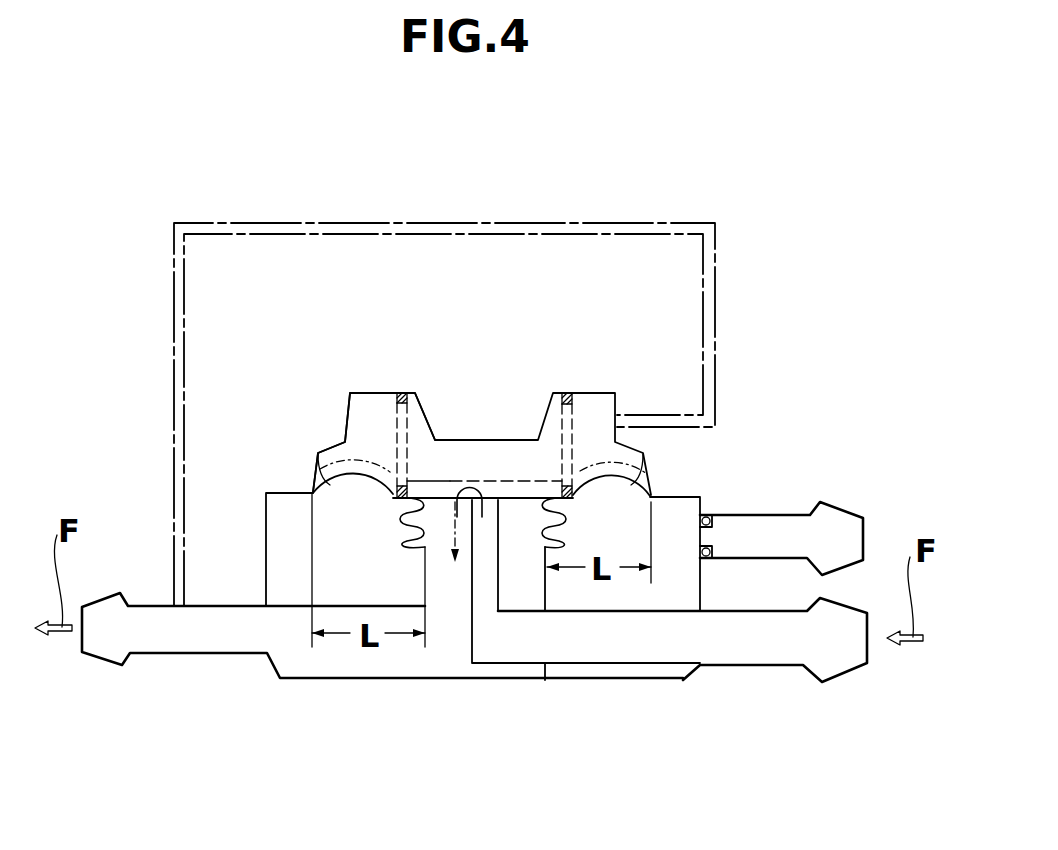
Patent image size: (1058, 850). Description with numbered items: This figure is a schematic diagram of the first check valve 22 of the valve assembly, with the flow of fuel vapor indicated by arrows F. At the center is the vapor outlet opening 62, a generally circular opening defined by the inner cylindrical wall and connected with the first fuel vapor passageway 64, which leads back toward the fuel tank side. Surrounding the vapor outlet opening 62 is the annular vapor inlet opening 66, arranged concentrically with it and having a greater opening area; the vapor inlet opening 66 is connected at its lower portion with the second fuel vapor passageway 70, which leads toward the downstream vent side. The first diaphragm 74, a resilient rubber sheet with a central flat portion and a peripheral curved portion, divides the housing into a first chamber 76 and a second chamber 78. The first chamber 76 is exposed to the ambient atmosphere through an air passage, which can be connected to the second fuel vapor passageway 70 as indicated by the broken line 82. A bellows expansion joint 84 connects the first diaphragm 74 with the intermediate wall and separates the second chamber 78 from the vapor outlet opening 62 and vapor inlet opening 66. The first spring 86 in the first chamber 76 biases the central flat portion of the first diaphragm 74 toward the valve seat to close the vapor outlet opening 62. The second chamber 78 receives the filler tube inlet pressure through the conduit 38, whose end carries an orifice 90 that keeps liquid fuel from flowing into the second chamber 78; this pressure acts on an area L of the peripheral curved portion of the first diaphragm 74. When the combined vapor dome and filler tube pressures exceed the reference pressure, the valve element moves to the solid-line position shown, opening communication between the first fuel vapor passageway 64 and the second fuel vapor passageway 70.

The first check valve 22 is at (470, 432).
The conduit 38 is at (792, 512).
The vapor outlet opening 62 is at (482, 404).
The first fuel vapor passageway 64 is at (763, 665).
The annular vapor inlet opening 66 is at (438, 507).
The second fuel vapor passageway 70 is at (227, 645).
The first diaphragm 74 is at (318, 455).
The first chamber 76 is at (368, 408).
The second chamber 78 is at (282, 542).
The broken line 82 is at (605, 226).
The bellows expansion joint 84 is at (399, 530).
The first spring 86 is at (565, 400).
The orifice 90 is at (708, 515).